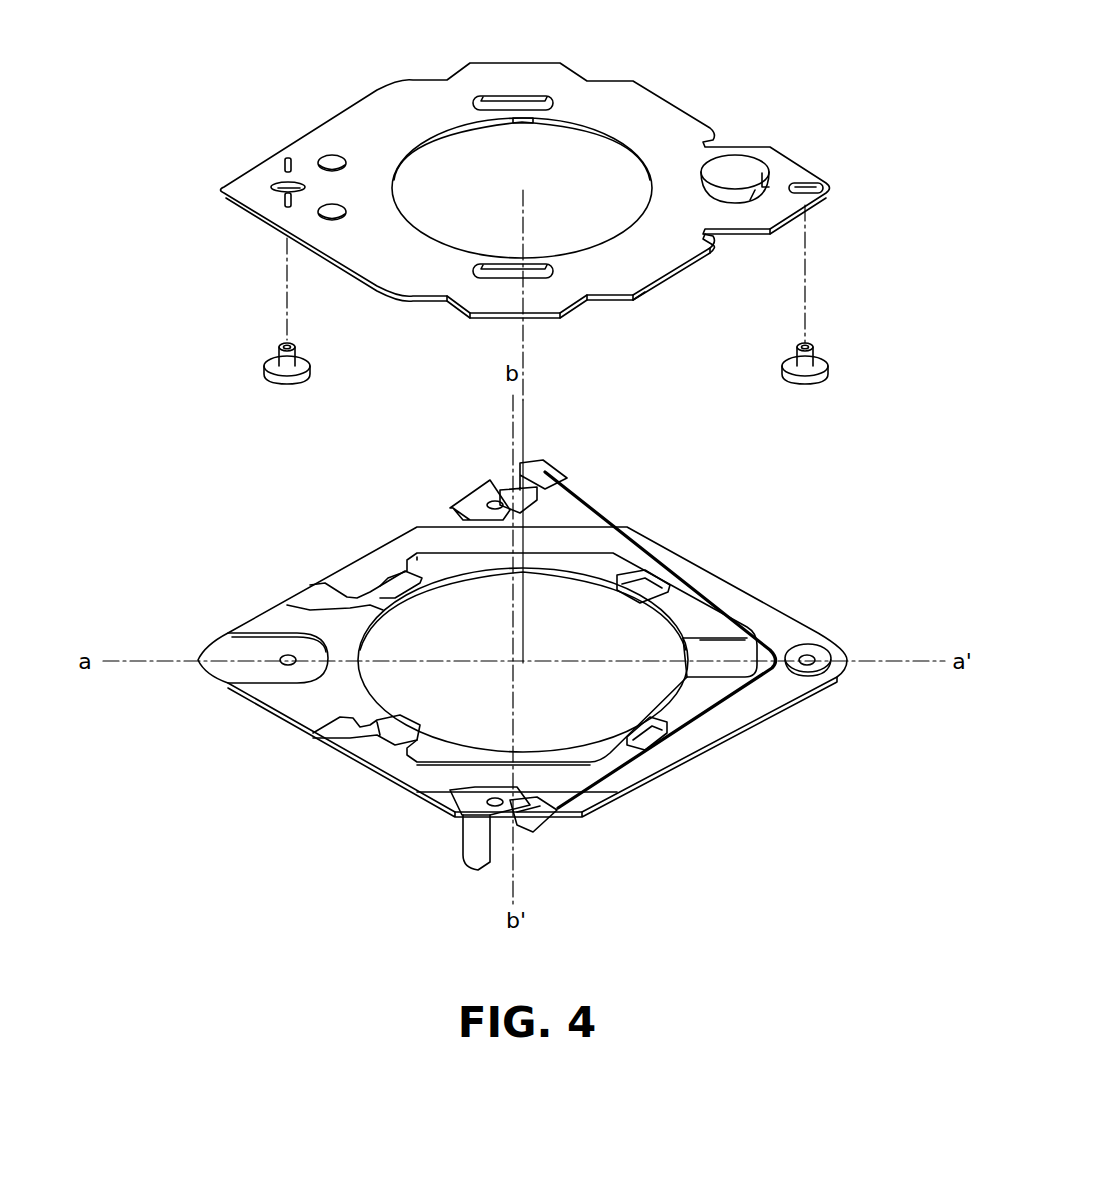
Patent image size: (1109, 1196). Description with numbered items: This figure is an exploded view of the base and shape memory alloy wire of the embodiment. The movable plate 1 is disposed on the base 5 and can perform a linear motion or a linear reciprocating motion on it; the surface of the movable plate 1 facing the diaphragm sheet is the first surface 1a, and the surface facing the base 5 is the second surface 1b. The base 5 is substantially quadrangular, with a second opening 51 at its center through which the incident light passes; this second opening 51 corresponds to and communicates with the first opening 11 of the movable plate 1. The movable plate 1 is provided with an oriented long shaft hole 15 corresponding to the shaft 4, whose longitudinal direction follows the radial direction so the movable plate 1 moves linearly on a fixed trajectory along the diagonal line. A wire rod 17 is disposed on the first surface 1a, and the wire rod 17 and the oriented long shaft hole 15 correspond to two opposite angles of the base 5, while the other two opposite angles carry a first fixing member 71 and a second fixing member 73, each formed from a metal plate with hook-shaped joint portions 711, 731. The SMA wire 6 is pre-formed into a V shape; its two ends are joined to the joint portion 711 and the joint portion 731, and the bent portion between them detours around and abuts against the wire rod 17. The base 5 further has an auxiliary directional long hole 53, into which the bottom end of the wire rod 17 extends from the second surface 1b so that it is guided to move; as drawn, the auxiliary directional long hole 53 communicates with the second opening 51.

The movable plate 1 is at (494, 209).
The first surface 1a is at (343, 142).
The second surface 1b is at (668, 283).
The first opening 11 is at (455, 157).
The oriented long shaft hole 15 is at (272, 186).
The wire rod 17 is at (740, 168).
The shaft 4 is at (268, 363).
The base 5 is at (522, 652).
The second opening 51 is at (395, 622).
The auxiliary directional long hole 53 is at (745, 655).
The SMA wire 6 is at (758, 705).
The first fixing member 71 is at (483, 497).
The joint portion 711 is at (545, 470).
The second fixing member 73 is at (480, 812).
The joint portion 731 is at (545, 820).